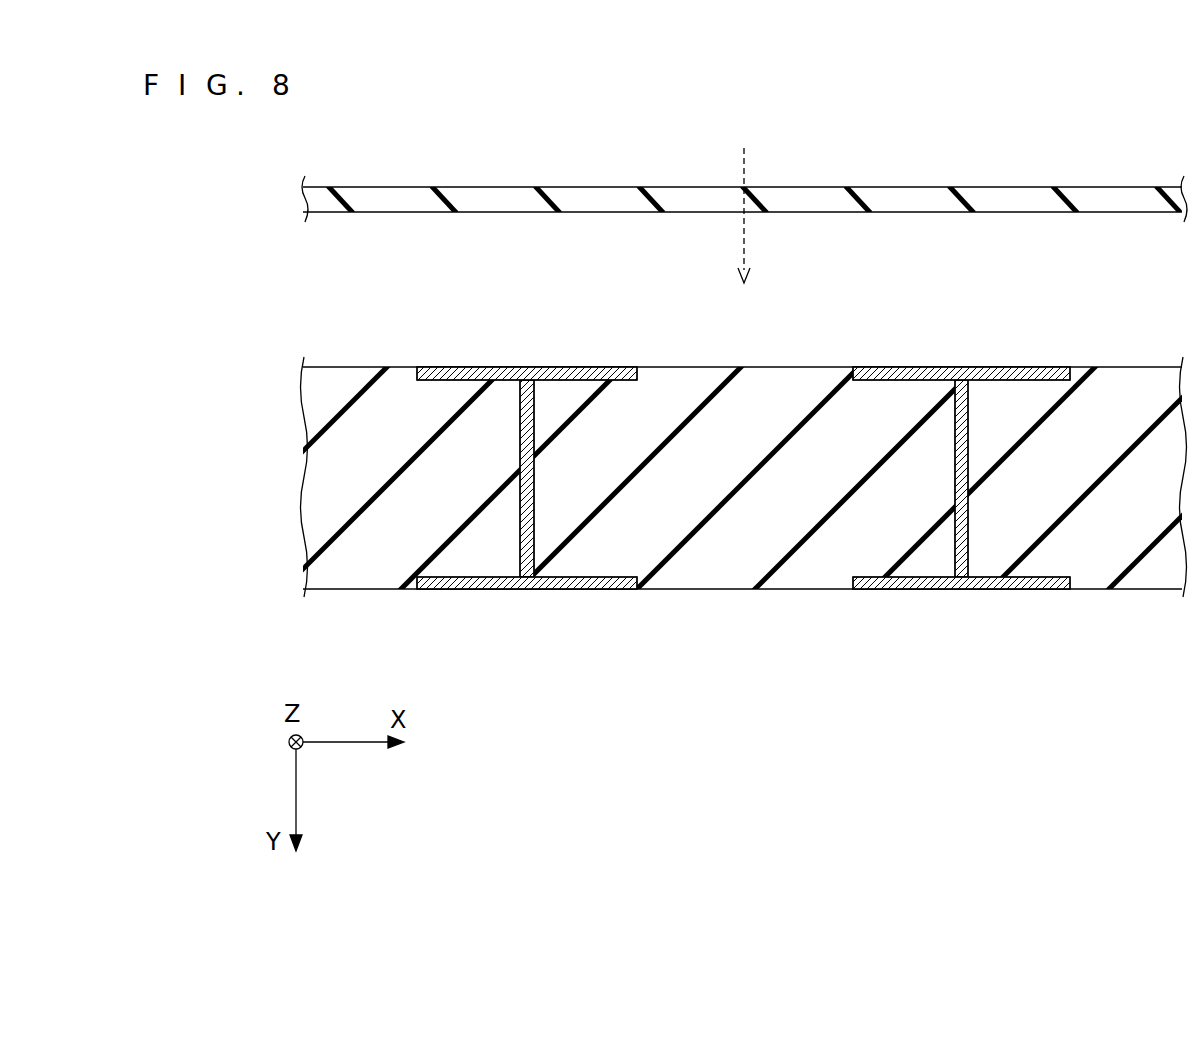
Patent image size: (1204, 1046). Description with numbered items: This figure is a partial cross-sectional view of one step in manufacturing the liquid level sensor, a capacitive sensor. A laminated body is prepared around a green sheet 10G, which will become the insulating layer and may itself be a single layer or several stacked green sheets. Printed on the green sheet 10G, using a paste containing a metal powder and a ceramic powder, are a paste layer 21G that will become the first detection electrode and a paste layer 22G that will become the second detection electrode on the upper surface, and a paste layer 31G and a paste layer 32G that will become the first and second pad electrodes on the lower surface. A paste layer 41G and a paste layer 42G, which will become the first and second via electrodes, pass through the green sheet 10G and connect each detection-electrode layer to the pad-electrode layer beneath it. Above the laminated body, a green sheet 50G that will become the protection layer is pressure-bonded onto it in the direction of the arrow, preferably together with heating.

The green sheet 50G is at (322, 200).
The green sheet 10G is at (325, 466).
The paste layer 21G is at (590, 367).
The paste layer 22G is at (890, 367).
The paste layer 31G is at (592, 589).
The paste layer 32G is at (905, 589).
The paste layer 41G is at (520, 532).
The paste layer 42G is at (968, 532).